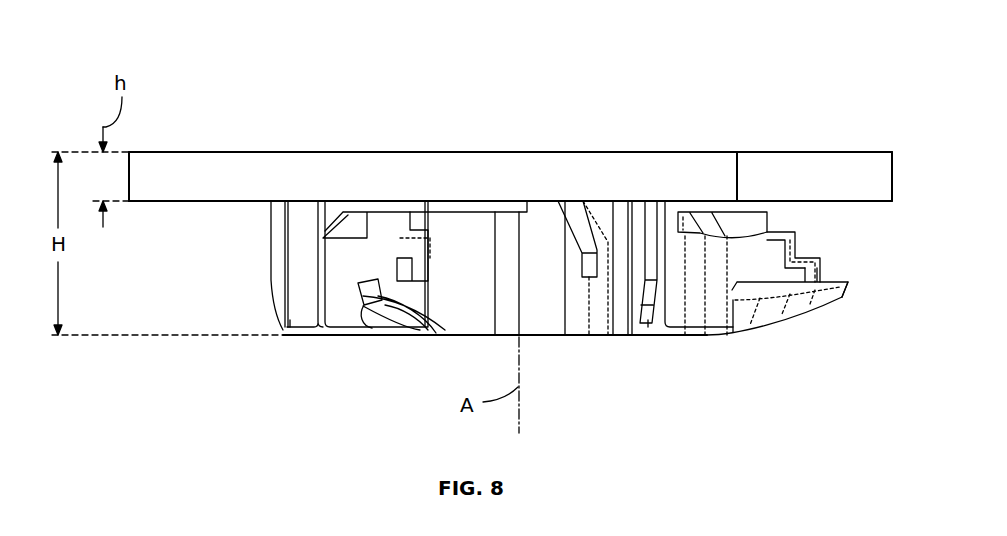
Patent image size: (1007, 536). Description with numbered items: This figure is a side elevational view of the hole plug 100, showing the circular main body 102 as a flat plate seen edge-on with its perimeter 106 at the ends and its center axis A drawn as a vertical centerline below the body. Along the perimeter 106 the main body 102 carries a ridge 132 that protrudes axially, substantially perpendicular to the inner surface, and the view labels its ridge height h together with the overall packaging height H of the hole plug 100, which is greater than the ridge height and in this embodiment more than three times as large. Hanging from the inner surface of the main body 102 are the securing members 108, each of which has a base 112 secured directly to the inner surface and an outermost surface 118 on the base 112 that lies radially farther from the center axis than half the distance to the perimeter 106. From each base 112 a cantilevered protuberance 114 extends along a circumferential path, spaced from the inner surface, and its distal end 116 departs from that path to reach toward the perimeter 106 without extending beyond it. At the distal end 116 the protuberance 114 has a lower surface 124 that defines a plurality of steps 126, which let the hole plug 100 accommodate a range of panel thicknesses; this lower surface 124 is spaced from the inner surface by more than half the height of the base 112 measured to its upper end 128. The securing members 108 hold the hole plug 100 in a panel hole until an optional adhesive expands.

The hole plug 100 is at (147, 38).
The main body 102 is at (337, 165).
The perimeter 106 is at (892, 150).
The securing member 108 is at (341, 345).
The base 112 is at (300, 307).
The cantilevered protuberance 114 is at (405, 302).
The distal end 116 is at (360, 305).
The outermost surface 118 is at (283, 283).
The lower surface 124 is at (363, 272).
The steps 126 is at (375, 271).
The upper end 128 is at (307, 338).
The ridge 132 is at (233, 166).